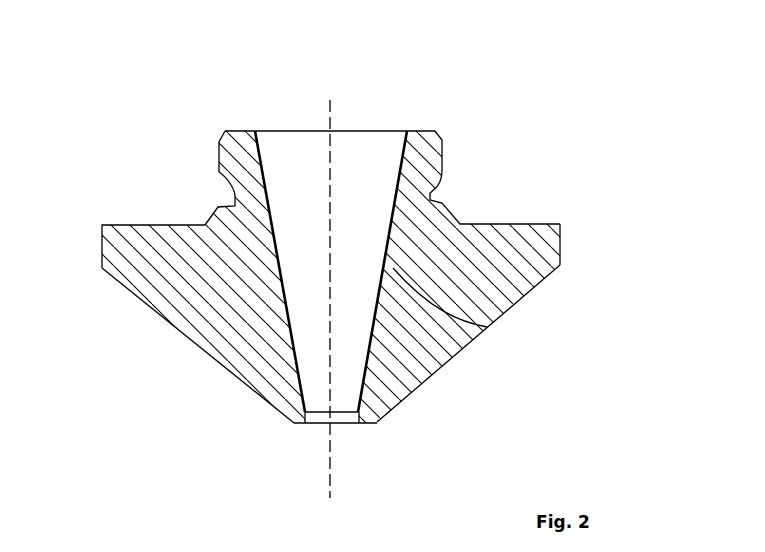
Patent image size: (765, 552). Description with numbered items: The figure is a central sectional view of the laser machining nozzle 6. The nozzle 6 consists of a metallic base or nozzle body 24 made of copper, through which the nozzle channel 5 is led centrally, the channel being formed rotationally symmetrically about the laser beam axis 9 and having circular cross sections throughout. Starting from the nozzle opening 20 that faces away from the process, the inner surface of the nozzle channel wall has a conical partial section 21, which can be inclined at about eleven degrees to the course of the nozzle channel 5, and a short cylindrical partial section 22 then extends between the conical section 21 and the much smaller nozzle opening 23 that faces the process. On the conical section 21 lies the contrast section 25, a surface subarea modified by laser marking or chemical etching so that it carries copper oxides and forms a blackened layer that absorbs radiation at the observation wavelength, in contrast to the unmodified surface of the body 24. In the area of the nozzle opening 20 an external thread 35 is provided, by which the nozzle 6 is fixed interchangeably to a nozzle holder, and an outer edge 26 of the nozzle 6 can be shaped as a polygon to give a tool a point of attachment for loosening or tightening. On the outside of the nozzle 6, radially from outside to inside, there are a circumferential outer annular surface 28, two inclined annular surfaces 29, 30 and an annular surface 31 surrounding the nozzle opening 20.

The nozzle 6 is at (488, 80).
The nozzle opening facing away from the process 20 is at (297, 131).
The annular surface surrounding the nozzle opening 31 is at (250, 130).
The inclined annular surface 30 is at (225, 131).
The external thread 35 is at (442, 145).
The inclined annular surface 29 is at (218, 207).
The circumferential outer annular surface 28 is at (102, 225).
The base (nozzle body) 24 is at (527, 224).
The outer edge 26 is at (560, 250).
The contrast section 25 is at (373, 325).
The nozzle channel 5 is at (303, 320).
The conical partial section 21 is at (487, 327).
The nozzle opening facing the process 23 is at (317, 423).
The cylindrical partial section 22 is at (360, 423).
The laser beam axis 9 is at (333, 480).